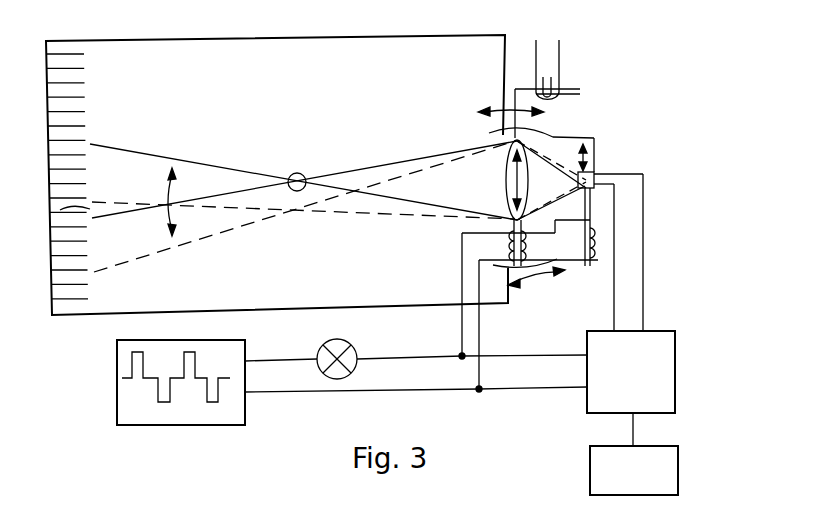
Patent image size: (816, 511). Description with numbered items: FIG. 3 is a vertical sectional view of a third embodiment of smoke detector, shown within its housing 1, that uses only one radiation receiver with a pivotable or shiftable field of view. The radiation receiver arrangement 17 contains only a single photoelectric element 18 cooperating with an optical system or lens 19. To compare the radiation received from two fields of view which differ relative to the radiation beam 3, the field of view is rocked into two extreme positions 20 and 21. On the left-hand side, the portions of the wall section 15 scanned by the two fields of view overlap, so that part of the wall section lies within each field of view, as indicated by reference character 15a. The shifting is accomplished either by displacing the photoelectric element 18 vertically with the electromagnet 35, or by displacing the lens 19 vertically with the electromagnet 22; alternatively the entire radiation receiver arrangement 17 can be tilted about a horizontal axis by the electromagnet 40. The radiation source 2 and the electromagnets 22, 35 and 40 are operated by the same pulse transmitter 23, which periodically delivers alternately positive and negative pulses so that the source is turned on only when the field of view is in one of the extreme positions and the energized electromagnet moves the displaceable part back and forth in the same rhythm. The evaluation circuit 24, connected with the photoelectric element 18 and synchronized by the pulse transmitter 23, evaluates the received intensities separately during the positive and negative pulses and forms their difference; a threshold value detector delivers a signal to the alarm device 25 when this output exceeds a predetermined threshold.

The measuring instrument housing 1 is at (257, 37).
The wall section 15 is at (74, 124).
The overlapping wall portion 15a is at (60, 210).
The first extreme position of field of view 20 is at (395, 135).
The second extreme position of field of view 21 is at (386, 231).
The radiation beam 3 is at (298, 172).
The electromagnet 40 is at (547, 70).
The radiation receiver arrangement 17 is at (572, 138).
The photoelectric element 18 is at (596, 168).
The lens 19 is at (506, 177).
The electromagnet 22 is at (500, 243).
The electromagnet 35 is at (603, 246).
The evaluation circuit 24 is at (597, 350).
The alarm device 25 is at (600, 458).
The radiation source 2 is at (362, 355).
The pulse transmitter 23 is at (183, 412).